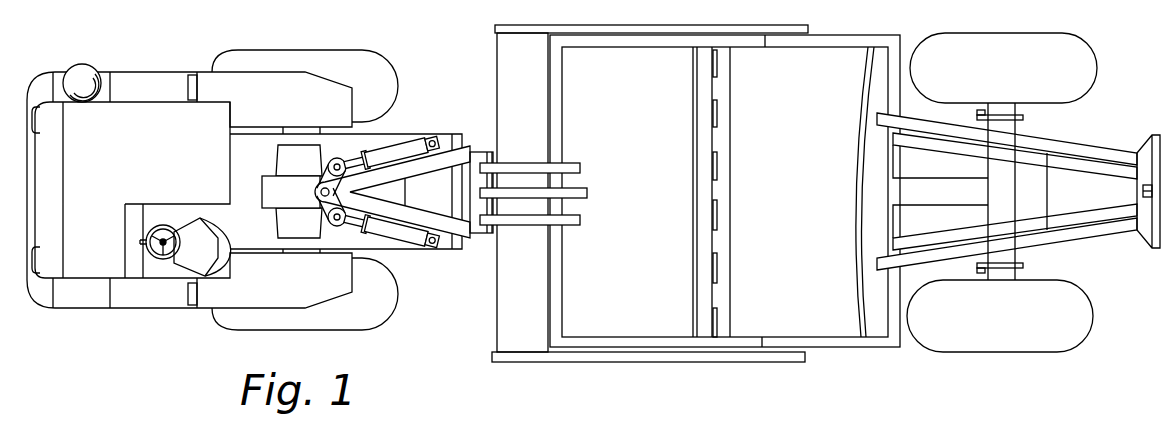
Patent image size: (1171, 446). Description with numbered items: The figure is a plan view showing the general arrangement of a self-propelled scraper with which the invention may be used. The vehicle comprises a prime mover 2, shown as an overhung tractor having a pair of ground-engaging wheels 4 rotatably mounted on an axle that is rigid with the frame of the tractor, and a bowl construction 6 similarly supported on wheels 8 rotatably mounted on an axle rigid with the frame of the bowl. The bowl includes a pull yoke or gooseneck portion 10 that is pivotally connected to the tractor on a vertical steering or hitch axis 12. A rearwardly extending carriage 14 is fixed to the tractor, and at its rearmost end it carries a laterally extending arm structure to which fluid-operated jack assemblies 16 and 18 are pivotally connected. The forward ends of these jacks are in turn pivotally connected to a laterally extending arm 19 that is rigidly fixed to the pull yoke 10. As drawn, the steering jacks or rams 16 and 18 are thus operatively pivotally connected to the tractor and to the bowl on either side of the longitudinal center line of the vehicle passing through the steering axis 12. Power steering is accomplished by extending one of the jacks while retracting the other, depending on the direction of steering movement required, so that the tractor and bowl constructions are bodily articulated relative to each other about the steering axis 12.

The prime mover 2 is at (161, 69).
The ground-engaging wheels 4 is at (315, 58).
The bowl construction 6 is at (864, 35).
The wheels 8 is at (1047, 47).
The pull yoke or gooseneck portion 10 is at (468, 150).
The vertical steering or hitch axis 12 is at (322, 197).
The rearwardly extending carriage 14 is at (397, 190).
The fluid-operated jack assembly 16 is at (383, 150).
The fluid-operated jack assembly 18 is at (392, 232).
The laterally extending arm 19 is at (328, 172).